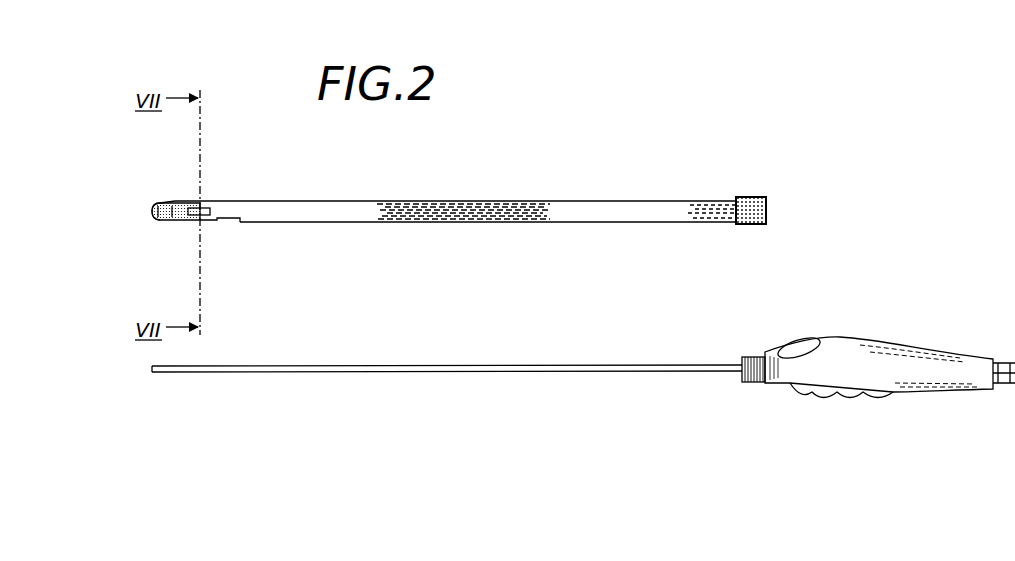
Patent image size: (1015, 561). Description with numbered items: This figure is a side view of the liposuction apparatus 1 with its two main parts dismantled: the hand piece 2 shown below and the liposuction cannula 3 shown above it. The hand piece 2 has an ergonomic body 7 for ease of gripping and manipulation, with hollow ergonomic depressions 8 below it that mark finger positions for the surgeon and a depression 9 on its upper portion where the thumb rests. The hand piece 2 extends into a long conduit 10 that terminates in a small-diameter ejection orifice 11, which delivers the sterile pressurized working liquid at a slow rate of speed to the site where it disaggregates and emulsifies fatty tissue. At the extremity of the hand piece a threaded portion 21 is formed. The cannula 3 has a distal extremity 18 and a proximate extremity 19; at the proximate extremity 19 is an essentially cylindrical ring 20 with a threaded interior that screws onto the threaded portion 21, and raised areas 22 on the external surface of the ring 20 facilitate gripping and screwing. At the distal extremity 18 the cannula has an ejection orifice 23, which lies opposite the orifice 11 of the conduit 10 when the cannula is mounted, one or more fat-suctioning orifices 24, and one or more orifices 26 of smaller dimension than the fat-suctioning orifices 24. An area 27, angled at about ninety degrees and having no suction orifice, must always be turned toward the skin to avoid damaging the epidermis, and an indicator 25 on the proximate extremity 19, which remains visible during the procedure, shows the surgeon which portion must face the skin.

The liposuction apparatus 1 is at (558, 386).
The hand piece 2 is at (933, 326).
The liposuction cannula 3 is at (457, 181).
The ergonomic body 7 is at (927, 393).
The hollow ergonomic depressions 8 is at (853, 398).
The depression 9 is at (800, 339).
The conduit 10 is at (332, 374).
The ejection orifice 11 is at (150, 368).
The distal extremity 18 is at (163, 179).
The proximate extremity 19 is at (708, 179).
The ring 20 is at (750, 231).
The threaded portion 21 is at (752, 387).
The raised areas 22 is at (760, 210).
The ejection orifice 23 is at (152, 208).
The fat-suctioning orifices 24 is at (207, 208).
The indicator 25 is at (752, 197).
The orifices 26 is at (172, 211).
The area 27 is at (168, 198).